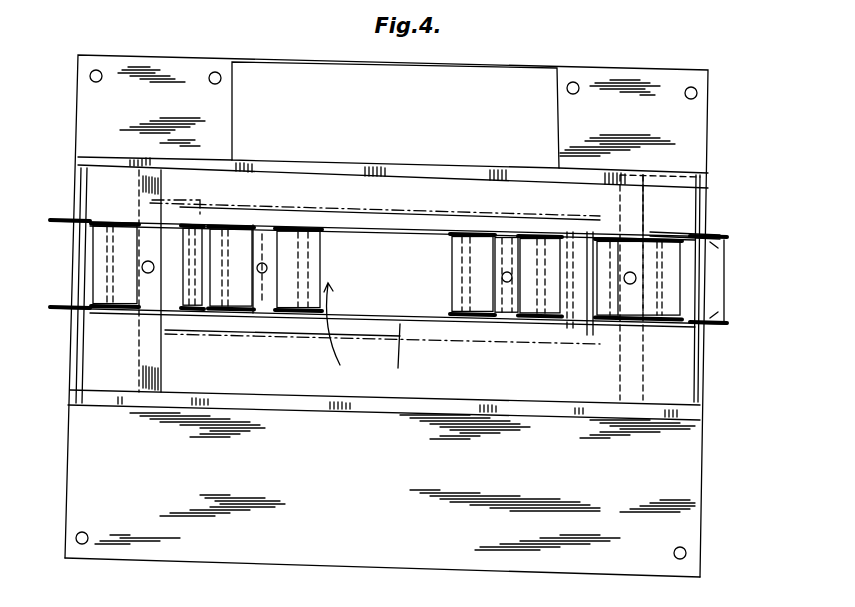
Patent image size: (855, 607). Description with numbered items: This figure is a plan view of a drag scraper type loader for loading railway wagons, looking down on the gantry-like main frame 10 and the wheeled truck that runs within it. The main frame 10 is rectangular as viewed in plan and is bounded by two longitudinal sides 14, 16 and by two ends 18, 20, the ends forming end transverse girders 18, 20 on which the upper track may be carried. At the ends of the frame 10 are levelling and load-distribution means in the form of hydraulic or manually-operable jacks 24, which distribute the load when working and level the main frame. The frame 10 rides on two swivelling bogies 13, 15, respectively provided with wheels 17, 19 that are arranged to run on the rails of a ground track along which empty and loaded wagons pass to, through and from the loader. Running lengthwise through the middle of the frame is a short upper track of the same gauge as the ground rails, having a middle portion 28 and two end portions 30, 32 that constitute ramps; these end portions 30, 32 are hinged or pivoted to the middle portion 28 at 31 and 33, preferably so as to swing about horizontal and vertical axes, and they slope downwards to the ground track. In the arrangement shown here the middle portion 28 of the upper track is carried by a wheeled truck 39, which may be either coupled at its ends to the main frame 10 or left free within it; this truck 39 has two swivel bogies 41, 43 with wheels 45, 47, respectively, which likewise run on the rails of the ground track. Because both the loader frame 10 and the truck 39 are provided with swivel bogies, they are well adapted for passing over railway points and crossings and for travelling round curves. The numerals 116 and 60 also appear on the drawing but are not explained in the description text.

The main frame 10 is at (68, 404).
The bottom plate edge 116 is at (381, 560).
The swivelling bogie 13 is at (129, 318).
The longitudinal side 14 is at (374, 410).
The swivelling bogie 15 is at (590, 337).
The longitudinal side 16 is at (380, 170).
The wheels 17 is at (101, 224).
The end transverse girder 18 is at (80, 203).
The wheels 19 is at (541, 237).
The end transverse girder 20 is at (700, 391).
The jacks 24 is at (210, 73).
The middle portion of upper track 28 is at (385, 319).
The end portion of upper track 30 is at (724, 250).
The hinge 31 is at (706, 236).
The end portion of upper track 32 is at (72, 224).
The hinge 33 is at (76, 302).
The wheeled truck 39 is at (343, 333).
The swivel bogie 41 is at (301, 311).
The swivel bogie 43 is at (452, 302).
The wheels 45 is at (236, 228).
The wheels 47 is at (491, 236).
The spacer 60 is at (396, 355).